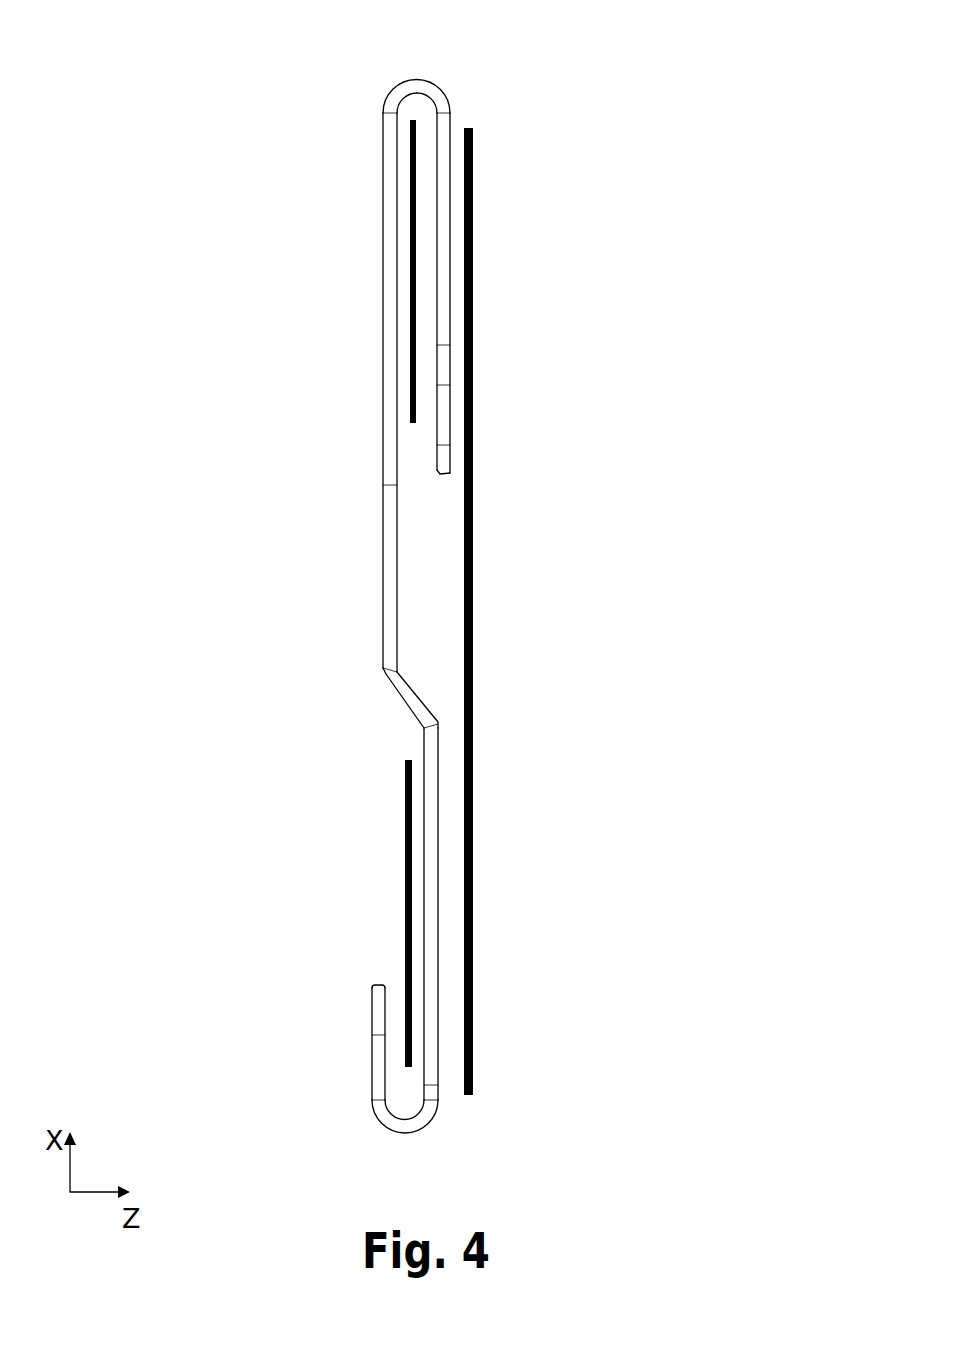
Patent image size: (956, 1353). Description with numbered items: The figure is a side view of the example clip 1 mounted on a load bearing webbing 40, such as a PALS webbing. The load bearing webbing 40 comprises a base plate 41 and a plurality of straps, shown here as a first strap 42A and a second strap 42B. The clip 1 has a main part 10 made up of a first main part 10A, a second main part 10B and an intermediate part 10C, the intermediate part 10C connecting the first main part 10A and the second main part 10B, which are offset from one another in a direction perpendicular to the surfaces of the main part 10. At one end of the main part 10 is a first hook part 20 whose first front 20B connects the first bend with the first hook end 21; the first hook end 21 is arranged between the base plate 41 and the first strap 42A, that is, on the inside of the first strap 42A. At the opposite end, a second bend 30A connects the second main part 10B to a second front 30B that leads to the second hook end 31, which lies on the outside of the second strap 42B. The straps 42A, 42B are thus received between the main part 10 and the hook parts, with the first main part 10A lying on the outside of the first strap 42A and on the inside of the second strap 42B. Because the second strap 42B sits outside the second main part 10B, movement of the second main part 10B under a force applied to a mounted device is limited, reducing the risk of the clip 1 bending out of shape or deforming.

The clip 1 is at (168, 140).
The main part 10 is at (284, 638).
The first main part 10A is at (323, 392).
The second main part 10B is at (366, 710).
The intermediate part 10C is at (562, 893).
The first hook part 20 is at (464, 288).
The first front 20B is at (491, 265).
The first hook end 21 is at (431, 512).
The second bend 30A is at (402, 1151).
The second front 30B is at (321, 1044).
The second hook end 31 is at (370, 957).
The load bearing webbing 40 is at (578, 150).
The base plate 41 is at (523, 611).
The first strap 42A is at (350, 271).
The second strap 42B is at (347, 913).